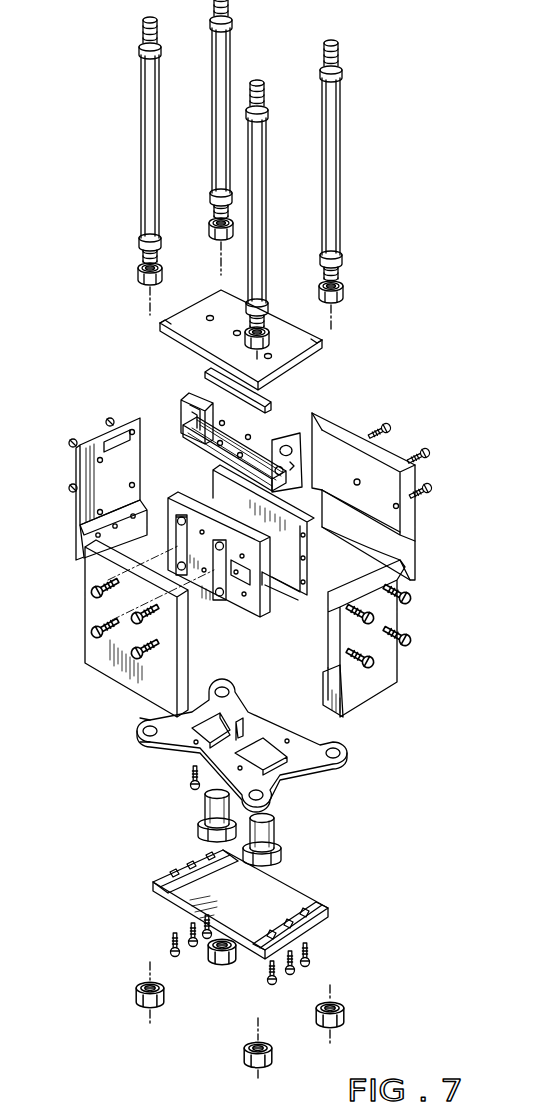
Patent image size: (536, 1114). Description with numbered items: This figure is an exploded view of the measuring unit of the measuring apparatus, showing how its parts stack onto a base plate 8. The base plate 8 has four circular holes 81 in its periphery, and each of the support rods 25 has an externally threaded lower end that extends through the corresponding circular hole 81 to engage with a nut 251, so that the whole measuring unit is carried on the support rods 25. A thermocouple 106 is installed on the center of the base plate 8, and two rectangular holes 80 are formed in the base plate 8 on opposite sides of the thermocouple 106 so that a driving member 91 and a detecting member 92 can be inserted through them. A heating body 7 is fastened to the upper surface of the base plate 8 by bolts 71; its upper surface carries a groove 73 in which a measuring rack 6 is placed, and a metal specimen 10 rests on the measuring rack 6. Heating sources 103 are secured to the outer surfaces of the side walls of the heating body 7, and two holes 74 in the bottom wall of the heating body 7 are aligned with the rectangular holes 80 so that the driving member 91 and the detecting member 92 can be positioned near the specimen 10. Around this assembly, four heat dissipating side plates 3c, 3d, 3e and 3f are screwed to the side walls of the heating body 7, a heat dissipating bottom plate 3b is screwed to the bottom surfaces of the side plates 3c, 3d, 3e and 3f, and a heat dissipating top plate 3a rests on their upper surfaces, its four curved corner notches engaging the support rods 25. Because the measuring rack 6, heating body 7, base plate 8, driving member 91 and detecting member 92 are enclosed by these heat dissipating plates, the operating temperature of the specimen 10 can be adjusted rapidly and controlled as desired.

The support rods 25 is at (339, 196).
The heat dissipating top plate 3a is at (290, 332).
The metal specimen 10 is at (268, 405).
The measuring rack 6 is at (185, 402).
The heat dissipating side plate 3c is at (80, 460).
The groove 73 is at (214, 492).
The heating body 7 is at (200, 530).
The holes 74 is at (272, 580).
The heat dissipating side plate 3f is at (390, 452).
The heat dissipating side plate 3e is at (98, 652).
The heating sources 103 is at (95, 612).
The heat dissipating side plate 3d is at (388, 660).
The base plate 8 is at (185, 742).
The circular holes 81 is at (140, 727).
The rectangular holes 80 is at (213, 718).
The thermocouple 106 is at (242, 728).
The bolts 71 is at (190, 786).
The detecting member 92 is at (205, 810).
The driving member 91 is at (283, 834).
The heat dissipating bottom plate 3b is at (153, 883).
The nut 251 is at (135, 993).